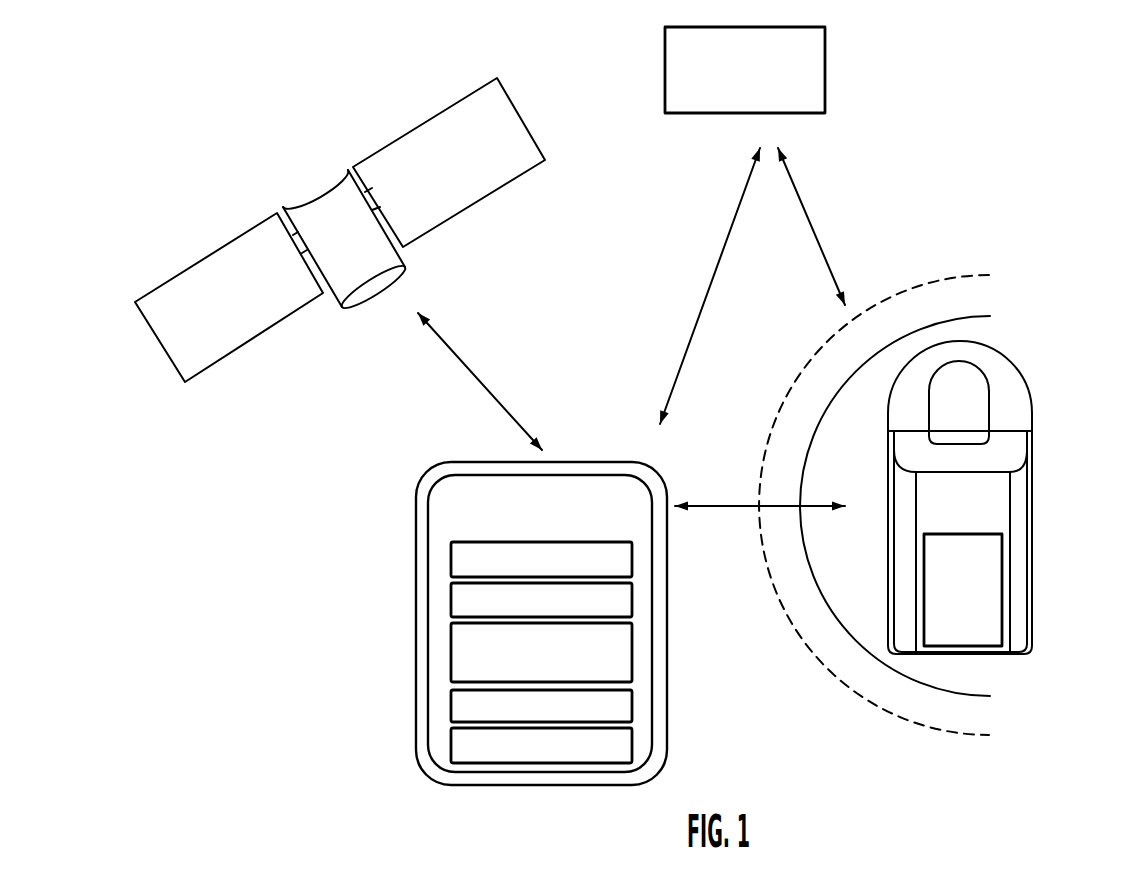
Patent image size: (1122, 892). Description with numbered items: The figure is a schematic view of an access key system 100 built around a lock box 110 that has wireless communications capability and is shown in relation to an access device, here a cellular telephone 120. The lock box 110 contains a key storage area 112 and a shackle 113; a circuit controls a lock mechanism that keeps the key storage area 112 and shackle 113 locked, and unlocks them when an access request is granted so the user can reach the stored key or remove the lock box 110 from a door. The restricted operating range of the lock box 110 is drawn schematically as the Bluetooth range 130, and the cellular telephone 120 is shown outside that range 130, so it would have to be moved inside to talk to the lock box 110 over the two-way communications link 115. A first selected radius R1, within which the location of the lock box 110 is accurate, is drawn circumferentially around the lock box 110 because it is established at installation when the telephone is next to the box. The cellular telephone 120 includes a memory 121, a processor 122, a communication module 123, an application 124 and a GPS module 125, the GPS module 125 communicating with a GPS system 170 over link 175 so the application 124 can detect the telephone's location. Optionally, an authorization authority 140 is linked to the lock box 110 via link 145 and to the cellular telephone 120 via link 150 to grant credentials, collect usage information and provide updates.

The access key system 100 is at (954, 148).
The lock box 110 is at (1034, 509).
The key storage area 112 is at (1002, 635).
The shackle 113 is at (1031, 372).
The communications link 115 is at (727, 502).
The cellular telephone 120 is at (416, 502).
The memory 121 is at (450, 557).
The processor 122 is at (450, 592).
The communication module 123 is at (450, 640).
The application 124 is at (450, 696).
The GPS module 125 is at (450, 743).
The operating range 130 is at (817, 661).
The first selected radius R1 is at (886, 667).
The authorization authority 140 is at (825, 57).
The link 145 is at (827, 250).
The link 150 is at (718, 258).
The GPS system 170 is at (239, 183).
The link 175 is at (480, 380).